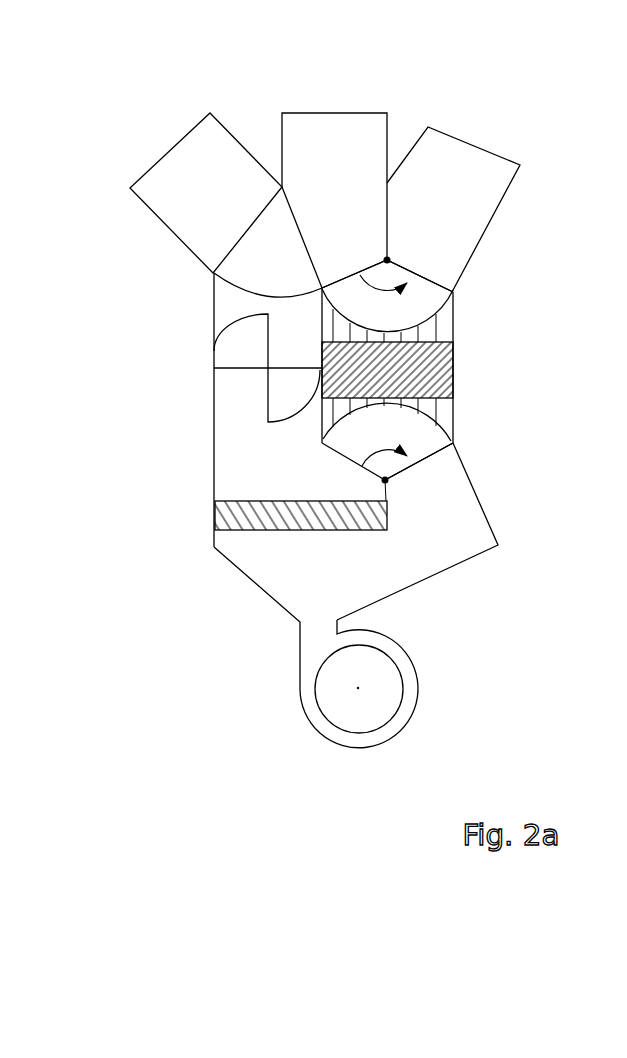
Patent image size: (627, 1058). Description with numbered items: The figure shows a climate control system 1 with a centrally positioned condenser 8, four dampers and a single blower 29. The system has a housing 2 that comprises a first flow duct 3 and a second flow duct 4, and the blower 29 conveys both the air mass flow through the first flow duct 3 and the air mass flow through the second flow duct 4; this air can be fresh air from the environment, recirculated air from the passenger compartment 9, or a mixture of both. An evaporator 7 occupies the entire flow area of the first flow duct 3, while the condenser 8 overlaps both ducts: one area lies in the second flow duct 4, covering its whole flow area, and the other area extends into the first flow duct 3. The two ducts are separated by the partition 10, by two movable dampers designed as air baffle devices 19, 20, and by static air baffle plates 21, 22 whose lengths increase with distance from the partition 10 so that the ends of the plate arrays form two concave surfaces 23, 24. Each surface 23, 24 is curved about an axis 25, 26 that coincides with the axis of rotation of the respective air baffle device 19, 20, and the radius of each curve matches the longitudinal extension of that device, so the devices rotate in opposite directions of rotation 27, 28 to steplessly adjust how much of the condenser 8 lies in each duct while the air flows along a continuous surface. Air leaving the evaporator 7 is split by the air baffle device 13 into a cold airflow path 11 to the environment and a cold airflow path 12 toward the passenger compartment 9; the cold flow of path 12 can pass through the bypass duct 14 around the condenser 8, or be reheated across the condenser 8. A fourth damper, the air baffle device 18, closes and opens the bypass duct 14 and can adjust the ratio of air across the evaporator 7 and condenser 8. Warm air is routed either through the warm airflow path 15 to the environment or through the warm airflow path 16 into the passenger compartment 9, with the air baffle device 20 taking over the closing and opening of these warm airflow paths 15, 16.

The climate control system 1 is at (576, 91).
The housing 2 is at (275, 603).
The first flow duct 3 is at (203, 469).
The second flow duct 4 is at (492, 487).
The evaporator 7 is at (215, 518).
The condenser 8 is at (455, 362).
The passenger compartment 9 is at (340, 98).
The partition 10 is at (387, 500).
The cold airflow path 11 is at (202, 177).
The cold airflow path 12 is at (300, 210).
The air baffle device 13 is at (300, 265).
The bypass duct 14 is at (235, 312).
The warm airflow path 15 is at (435, 175).
The warm airflow path 16 is at (350, 265).
The air baffle device 18 is at (247, 370).
The air baffle device 19 is at (398, 476).
The air baffle device 20 is at (328, 282).
The air baffle plate 21 is at (433, 408).
The air baffle plate 22 is at (433, 330).
The concave surface 23 is at (377, 407).
The concave surface 24 is at (372, 332).
The axis of rotation 25 is at (383, 479).
The axis of rotation 26 is at (385, 258).
The direction of rotation 27 is at (382, 288).
The direction of rotation 28 is at (393, 448).
The blower 29 is at (338, 693).